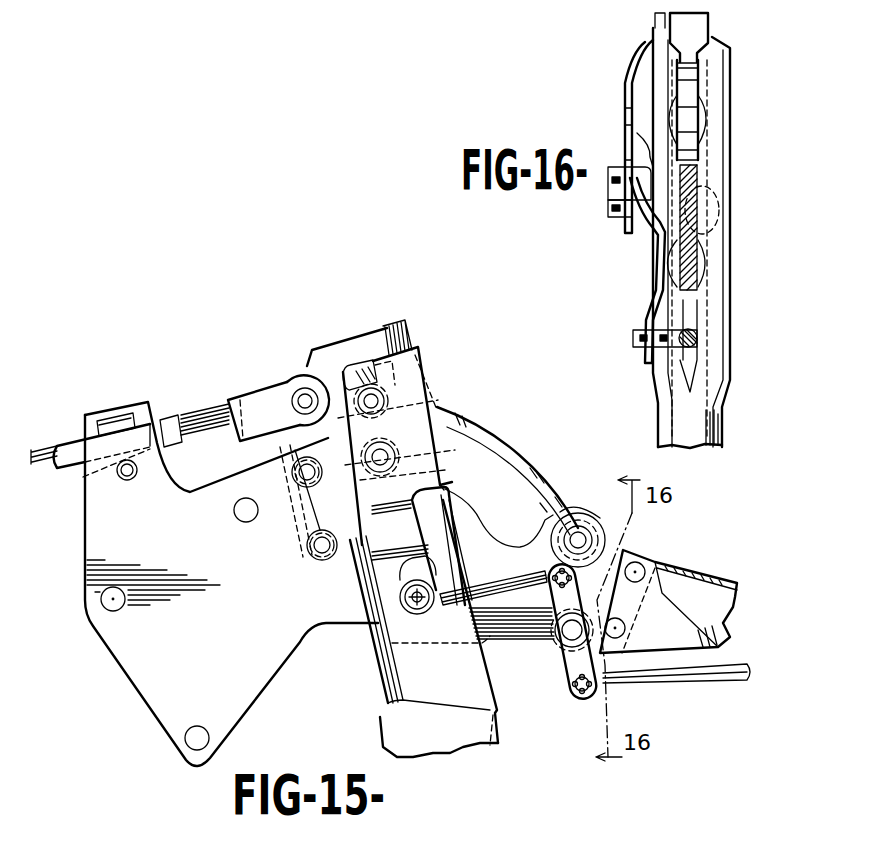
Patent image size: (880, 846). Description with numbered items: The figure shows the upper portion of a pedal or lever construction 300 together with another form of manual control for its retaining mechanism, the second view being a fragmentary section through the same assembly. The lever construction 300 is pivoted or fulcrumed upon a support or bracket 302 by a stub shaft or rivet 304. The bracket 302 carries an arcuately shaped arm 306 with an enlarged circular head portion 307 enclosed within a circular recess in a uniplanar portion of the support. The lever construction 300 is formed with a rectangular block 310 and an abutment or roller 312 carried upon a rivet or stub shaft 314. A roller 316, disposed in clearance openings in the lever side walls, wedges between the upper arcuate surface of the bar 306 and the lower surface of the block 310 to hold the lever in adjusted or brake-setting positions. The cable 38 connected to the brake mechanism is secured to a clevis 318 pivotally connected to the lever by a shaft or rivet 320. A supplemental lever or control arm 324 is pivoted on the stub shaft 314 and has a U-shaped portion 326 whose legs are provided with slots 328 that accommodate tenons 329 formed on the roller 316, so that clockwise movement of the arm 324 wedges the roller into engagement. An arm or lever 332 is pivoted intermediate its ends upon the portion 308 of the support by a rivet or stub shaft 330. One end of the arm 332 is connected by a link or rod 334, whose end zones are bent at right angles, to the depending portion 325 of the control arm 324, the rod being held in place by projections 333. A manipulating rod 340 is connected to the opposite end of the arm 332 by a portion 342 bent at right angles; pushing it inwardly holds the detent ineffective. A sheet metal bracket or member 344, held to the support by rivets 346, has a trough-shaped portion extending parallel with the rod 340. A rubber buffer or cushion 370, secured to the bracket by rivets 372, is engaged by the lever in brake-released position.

In FIG. 15, the lever construction 300 is at (511, 739).
In FIG. 16, the lever construction 300 is at (732, 428).
In FIG. 15, the support or bracket 302 is at (262, 690).
In FIG. 15, the stub shaft or rivet 304 is at (373, 631).
In FIG. 16, the stub shaft or rivet 304 is at (712, 186).
In FIG. 15, the arcuately shaped arm 306 is at (513, 449).
In FIG. 16, the arcuately shaped arm 306 is at (711, 29).
In FIG. 15, the enlarged circular head portion 307 is at (620, 528).
In FIG. 16, the enlarged circular head portion 307 is at (700, 98).
In FIG. 15, the portion of the support 308 is at (491, 640).
In FIG. 16, the portion of the support 308 is at (698, 210).
In FIG. 15, the rectangular block 310 is at (363, 362).
In FIG. 15, the abutment or roller 312 is at (395, 460).
In FIG. 15, the rivet or stub shaft 314 is at (442, 487).
In FIG. 15, the roller 316 is at (418, 352).
In FIG. 15, the clevis 318 is at (250, 385).
In FIG. 15, the shaft or rivet 320 is at (302, 392).
In FIG. 15, the supplemental lever or control arm 324 is at (384, 566).
In FIG. 16, the supplemental lever or control arm 324 is at (620, 83).
In FIG. 15, the depending portion 325 is at (413, 532).
In FIG. 15, the U-shaped portion 326 is at (435, 383).
In FIG. 15, the slots 328 is at (353, 388).
In FIG. 15, the tenons 329 is at (385, 404).
In FIG. 15, the rivet or stub shaft 330 is at (555, 657).
In FIG. 16, the rivet or stub shaft 330 is at (658, 263).
In FIG. 15, the arm or lever 332 is at (560, 601).
In FIG. 16, the arm or lever 332 is at (650, 220).
In FIG. 16, the projections 333 is at (633, 191).
In FIG. 15, the link or rod 334 is at (525, 574).
In FIG. 16, the link or rod 334 is at (647, 160).
In FIG. 15, the manipulating rod 340 is at (692, 684).
In FIG. 16, the manipulating rod 340 is at (690, 332).
In FIG. 15, the bent portion 342 is at (580, 694).
In FIG. 16, the bent portion 342 is at (640, 346).
In FIG. 15, the sheet metal bracket or member 344 is at (722, 584).
In FIG. 15, the rivets 346 is at (646, 571).
In FIG. 15, the rubber buffer or cushion 370 is at (317, 507).
In FIG. 15, the rivets 372 is at (292, 470).
In FIG. 15, the cable 38 is at (205, 413).